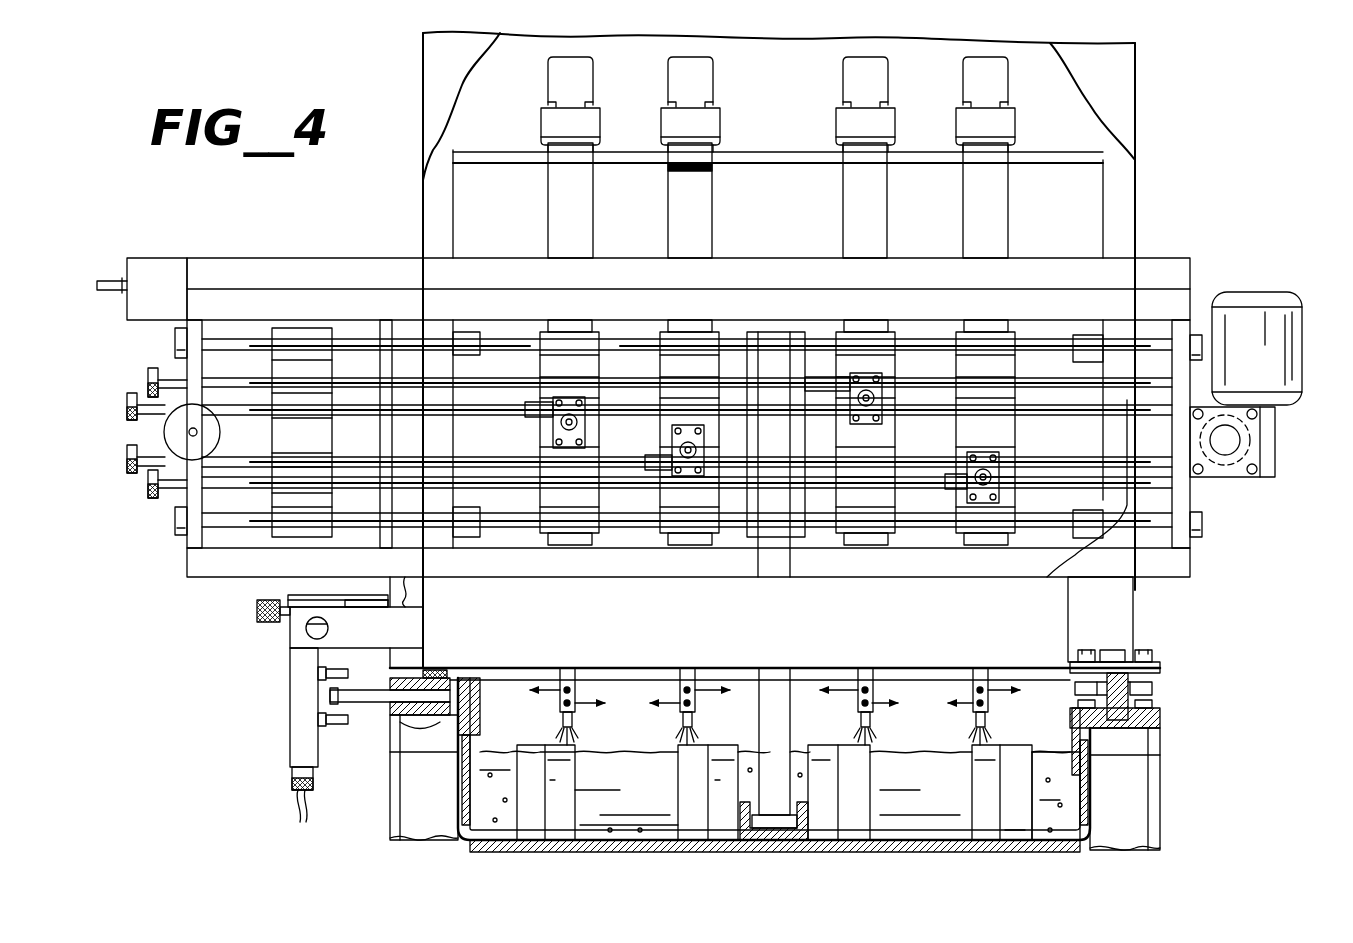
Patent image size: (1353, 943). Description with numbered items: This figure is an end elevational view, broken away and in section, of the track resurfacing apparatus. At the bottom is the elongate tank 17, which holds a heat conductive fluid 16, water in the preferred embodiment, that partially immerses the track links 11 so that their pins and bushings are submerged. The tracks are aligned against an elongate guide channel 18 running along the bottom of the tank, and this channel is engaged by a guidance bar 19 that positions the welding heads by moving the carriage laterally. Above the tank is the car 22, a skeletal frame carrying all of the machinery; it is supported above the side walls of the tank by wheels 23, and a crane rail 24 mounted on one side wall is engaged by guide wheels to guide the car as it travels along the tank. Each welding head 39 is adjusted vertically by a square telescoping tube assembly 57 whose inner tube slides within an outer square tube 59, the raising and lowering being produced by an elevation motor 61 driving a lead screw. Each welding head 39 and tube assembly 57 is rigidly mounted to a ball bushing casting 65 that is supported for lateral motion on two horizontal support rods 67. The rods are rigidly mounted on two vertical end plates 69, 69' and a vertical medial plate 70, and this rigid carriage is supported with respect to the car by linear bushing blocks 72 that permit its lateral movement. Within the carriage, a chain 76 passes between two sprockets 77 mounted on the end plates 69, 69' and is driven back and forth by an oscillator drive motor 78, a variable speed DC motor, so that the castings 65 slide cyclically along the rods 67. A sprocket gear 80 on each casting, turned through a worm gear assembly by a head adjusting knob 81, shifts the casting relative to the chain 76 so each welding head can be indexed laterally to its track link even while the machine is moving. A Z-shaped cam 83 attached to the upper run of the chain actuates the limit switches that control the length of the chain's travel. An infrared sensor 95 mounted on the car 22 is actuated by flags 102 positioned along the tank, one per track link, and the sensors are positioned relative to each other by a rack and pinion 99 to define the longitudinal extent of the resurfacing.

The track links 11 is at (530, 840).
The fluid 16 is at (1055, 845).
The tank 17 is at (392, 815).
The guide channel 18 is at (775, 840).
The guidance bar 19 is at (775, 682).
The car 22 is at (423, 234).
The wheels 23 is at (1152, 690).
The crane rail 24 is at (1140, 728).
The welding head 39 is at (688, 665).
The telescoping tube assembly 57 is at (826, 225).
The outer square tube 59 is at (664, 208).
The elevation motor 61 is at (678, 80).
The ball bushing casting 65 is at (962, 438).
The horizontal support rods 67 is at (175, 340).
The vertical end plate 69 is at (167, 446).
The vertical end plate 69' is at (1207, 448).
The vertical medial plate 70 is at (383, 535).
The linear bushing blocks 72 is at (466, 340).
The chain 76 is at (1070, 405).
The sprockets 77 is at (163, 432).
The oscillator drive motor 78 is at (1278, 357).
The sprocket gear 80 is at (585, 425).
The head adjusting knobs 81 is at (128, 393).
The Z-shaped cam 83 is at (318, 328).
The infrared sensor 95 is at (290, 710).
The rack and pinion 99 is at (306, 628).
The flags 102 is at (372, 712).